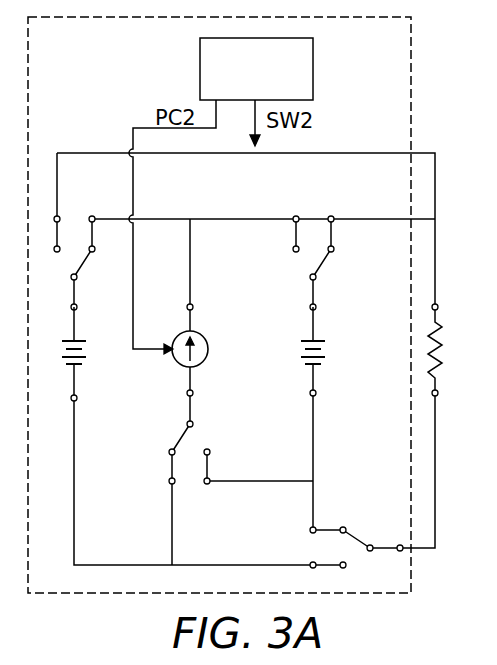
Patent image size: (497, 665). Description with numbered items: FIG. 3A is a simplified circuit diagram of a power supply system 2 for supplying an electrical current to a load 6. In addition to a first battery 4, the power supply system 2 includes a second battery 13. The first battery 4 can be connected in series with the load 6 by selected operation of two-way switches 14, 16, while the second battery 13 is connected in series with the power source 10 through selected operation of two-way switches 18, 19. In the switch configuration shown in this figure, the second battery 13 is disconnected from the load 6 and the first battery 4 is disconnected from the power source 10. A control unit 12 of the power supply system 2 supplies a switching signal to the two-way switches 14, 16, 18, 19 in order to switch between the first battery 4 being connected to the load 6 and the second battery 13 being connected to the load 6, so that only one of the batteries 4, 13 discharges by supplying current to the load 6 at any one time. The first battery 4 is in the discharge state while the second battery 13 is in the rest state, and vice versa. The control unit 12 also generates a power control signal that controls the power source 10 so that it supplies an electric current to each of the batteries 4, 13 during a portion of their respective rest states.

The power supply system 2 is at (411, 82).
The first battery 4 is at (317, 338).
The load 6 is at (442, 343).
The power source 10 is at (209, 349).
The control unit 12 is at (200, 70).
The second battery 13 is at (78, 338).
The two-way switch 14 is at (314, 216).
The two-way switch 16 is at (310, 548).
The two-way switch 18 is at (199, 437).
The two-way switch 19 is at (76, 216).